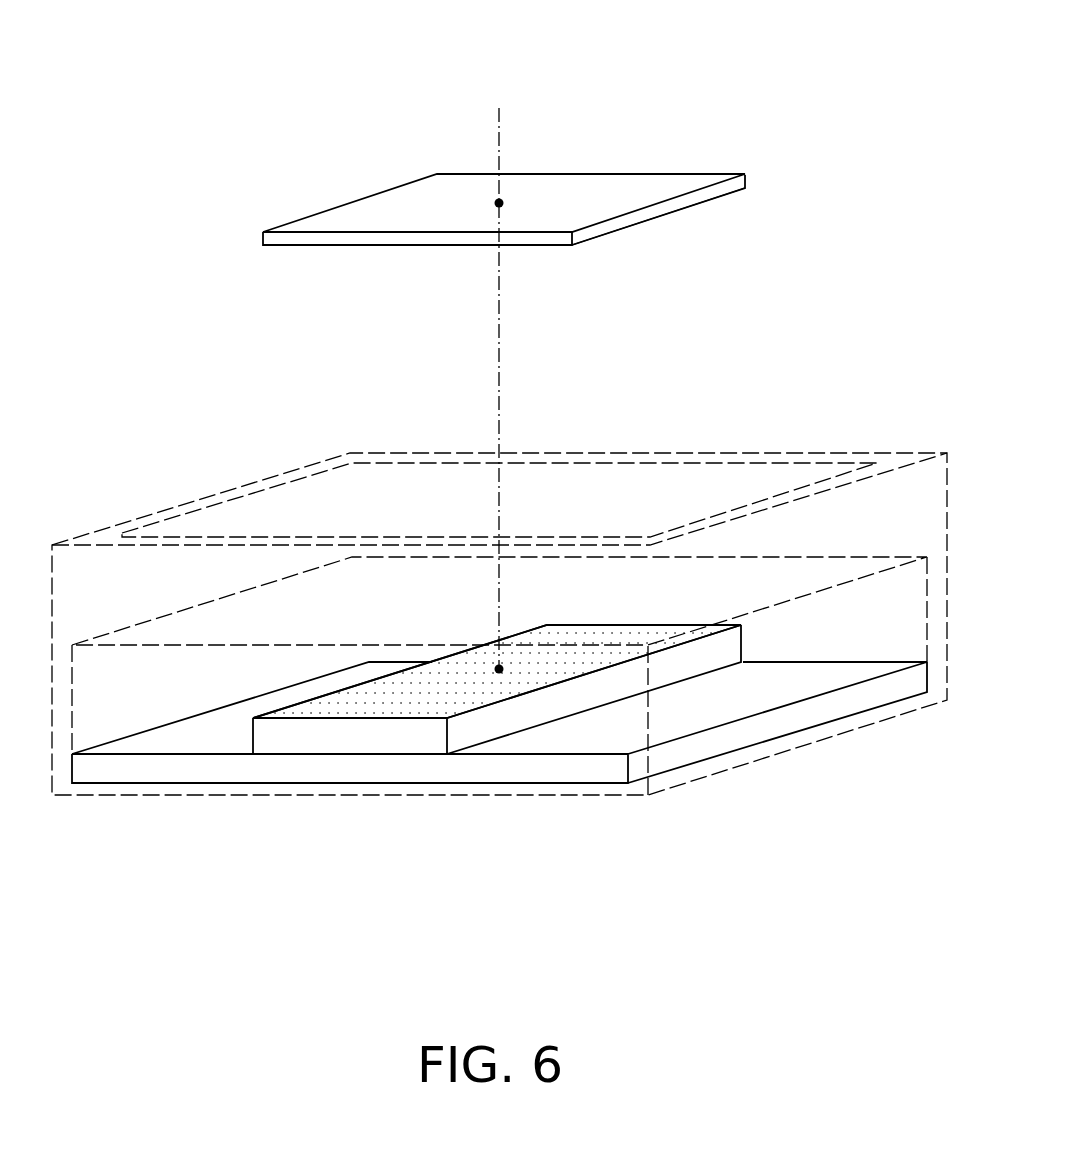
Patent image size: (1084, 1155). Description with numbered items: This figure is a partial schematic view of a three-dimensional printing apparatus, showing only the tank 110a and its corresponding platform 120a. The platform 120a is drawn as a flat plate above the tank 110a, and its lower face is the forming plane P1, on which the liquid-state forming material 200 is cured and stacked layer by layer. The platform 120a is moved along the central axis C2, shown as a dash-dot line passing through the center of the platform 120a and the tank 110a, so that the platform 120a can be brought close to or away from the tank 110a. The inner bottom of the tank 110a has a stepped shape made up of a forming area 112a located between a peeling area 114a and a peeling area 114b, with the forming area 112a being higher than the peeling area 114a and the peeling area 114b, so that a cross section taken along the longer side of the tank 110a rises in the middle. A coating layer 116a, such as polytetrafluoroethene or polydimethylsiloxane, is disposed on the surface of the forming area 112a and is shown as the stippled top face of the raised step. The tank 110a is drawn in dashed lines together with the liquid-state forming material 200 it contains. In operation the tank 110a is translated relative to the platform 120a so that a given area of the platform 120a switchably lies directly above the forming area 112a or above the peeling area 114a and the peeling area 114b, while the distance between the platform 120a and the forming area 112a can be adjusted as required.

The central axis C2 is at (501, 359).
The forming plane P1 is at (648, 222).
The platform 120a is at (630, 187).
The liquid-state forming material 200 is at (212, 600).
The tank 110a is at (405, 450).
The forming area 112a is at (347, 768).
The peeling area 114a is at (190, 768).
The peeling area 114b is at (545, 768).
The coating layer 116a is at (468, 673).